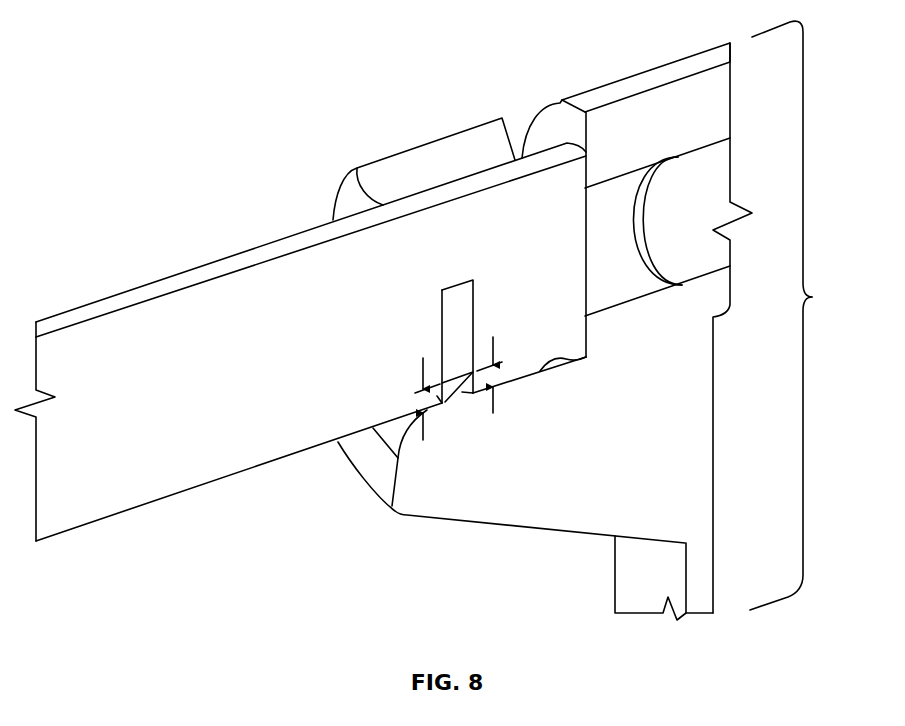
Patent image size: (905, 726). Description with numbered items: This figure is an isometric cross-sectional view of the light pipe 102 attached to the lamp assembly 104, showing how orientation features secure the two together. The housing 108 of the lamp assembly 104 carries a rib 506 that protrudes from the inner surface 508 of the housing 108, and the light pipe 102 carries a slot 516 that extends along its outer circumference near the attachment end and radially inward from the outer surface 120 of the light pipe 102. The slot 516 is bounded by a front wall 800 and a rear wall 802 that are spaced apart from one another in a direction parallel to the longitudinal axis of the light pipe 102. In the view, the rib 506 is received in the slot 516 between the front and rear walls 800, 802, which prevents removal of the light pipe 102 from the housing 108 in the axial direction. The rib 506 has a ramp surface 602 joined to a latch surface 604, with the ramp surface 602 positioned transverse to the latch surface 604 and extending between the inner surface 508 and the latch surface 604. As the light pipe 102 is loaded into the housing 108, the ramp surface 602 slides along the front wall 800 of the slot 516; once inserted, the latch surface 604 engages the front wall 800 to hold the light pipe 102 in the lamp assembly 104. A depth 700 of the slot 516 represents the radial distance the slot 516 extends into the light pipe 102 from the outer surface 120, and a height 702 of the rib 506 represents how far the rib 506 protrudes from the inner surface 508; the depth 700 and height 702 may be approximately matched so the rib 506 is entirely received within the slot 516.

The light pipe 102 is at (327, 262).
The lamp assembly 104 is at (803, 315).
The housing 108 is at (643, 105).
The outer surface 120 is at (160, 499).
The rib 506 is at (510, 503).
The inner surface 508 is at (566, 362).
The slot 516 is at (457, 284).
The ramp surface 602 is at (454, 378).
The latch surface 604 is at (475, 378).
The depth 700 is at (423, 358).
The height 702 is at (495, 337).
The front wall 800 is at (464, 393).
The rear wall 802 is at (438, 398).